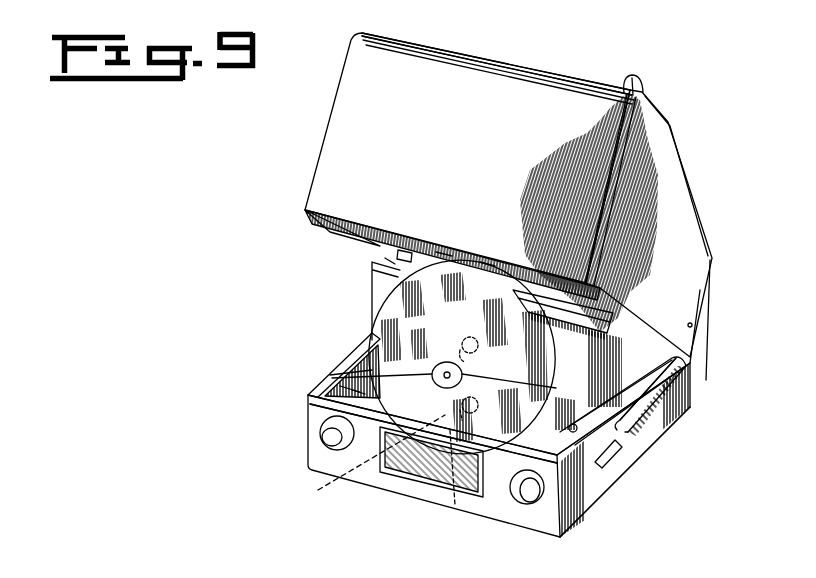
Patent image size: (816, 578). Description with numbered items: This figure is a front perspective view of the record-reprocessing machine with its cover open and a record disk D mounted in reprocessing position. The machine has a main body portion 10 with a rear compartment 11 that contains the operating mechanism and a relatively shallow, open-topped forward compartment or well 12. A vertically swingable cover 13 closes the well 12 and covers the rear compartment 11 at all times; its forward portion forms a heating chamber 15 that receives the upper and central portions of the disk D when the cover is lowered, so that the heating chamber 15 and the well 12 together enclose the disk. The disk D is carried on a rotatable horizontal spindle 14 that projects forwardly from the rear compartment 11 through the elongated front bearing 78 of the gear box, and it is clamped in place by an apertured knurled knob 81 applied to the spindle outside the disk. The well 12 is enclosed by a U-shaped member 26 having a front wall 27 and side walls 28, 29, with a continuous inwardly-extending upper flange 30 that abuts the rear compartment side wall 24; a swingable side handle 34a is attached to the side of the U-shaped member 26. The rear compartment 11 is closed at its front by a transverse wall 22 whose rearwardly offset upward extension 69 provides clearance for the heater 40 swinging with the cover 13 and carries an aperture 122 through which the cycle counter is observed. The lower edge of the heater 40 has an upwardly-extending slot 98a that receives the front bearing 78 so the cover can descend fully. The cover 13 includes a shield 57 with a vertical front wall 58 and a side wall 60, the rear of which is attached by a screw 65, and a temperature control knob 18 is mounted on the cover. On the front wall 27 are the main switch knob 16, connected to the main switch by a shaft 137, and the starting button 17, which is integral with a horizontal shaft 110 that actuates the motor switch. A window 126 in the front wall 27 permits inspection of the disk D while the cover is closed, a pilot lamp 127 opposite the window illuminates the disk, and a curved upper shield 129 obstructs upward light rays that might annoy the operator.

The main body portion 10 is at (601, 508).
The rear compartment 11 is at (364, 298).
The forward compartment or well 12 is at (585, 470).
The cover 13 is at (312, 158).
The spindle 14 is at (345, 361).
The heating chamber 15 is at (345, 228).
The main switch knob 16 is at (522, 503).
The starting button 17 is at (320, 441).
The temperature control knob 18 is at (643, 86).
The transverse wall 22 is at (630, 422).
The side wall 24 is at (640, 357).
The U-shaped member 26 is at (368, 496).
The front wall 27 is at (395, 491).
The side wall 28 is at (345, 386).
The side wall 29 is at (580, 504).
The upper flange 30 is at (335, 376).
The side handle 34a is at (360, 341).
The heater 40 is at (442, 250).
The cover shield 57 is at (512, 57).
The front wall 58 is at (440, 73).
The side wall 60 is at (710, 263).
The screw 65 is at (693, 323).
The upward extension 69 is at (392, 264).
The front bearing 78 is at (462, 340).
The knurled knob 81 is at (440, 365).
The slot 98a is at (484, 262).
The horizontal shaft 110 is at (355, 390).
The aperture 122 is at (398, 254).
The window 126 is at (418, 465).
The pilot lamp 127 is at (454, 506).
The upper shield 129 is at (330, 482).
The shaft 137 is at (605, 461).
The record disk D is at (372, 320).